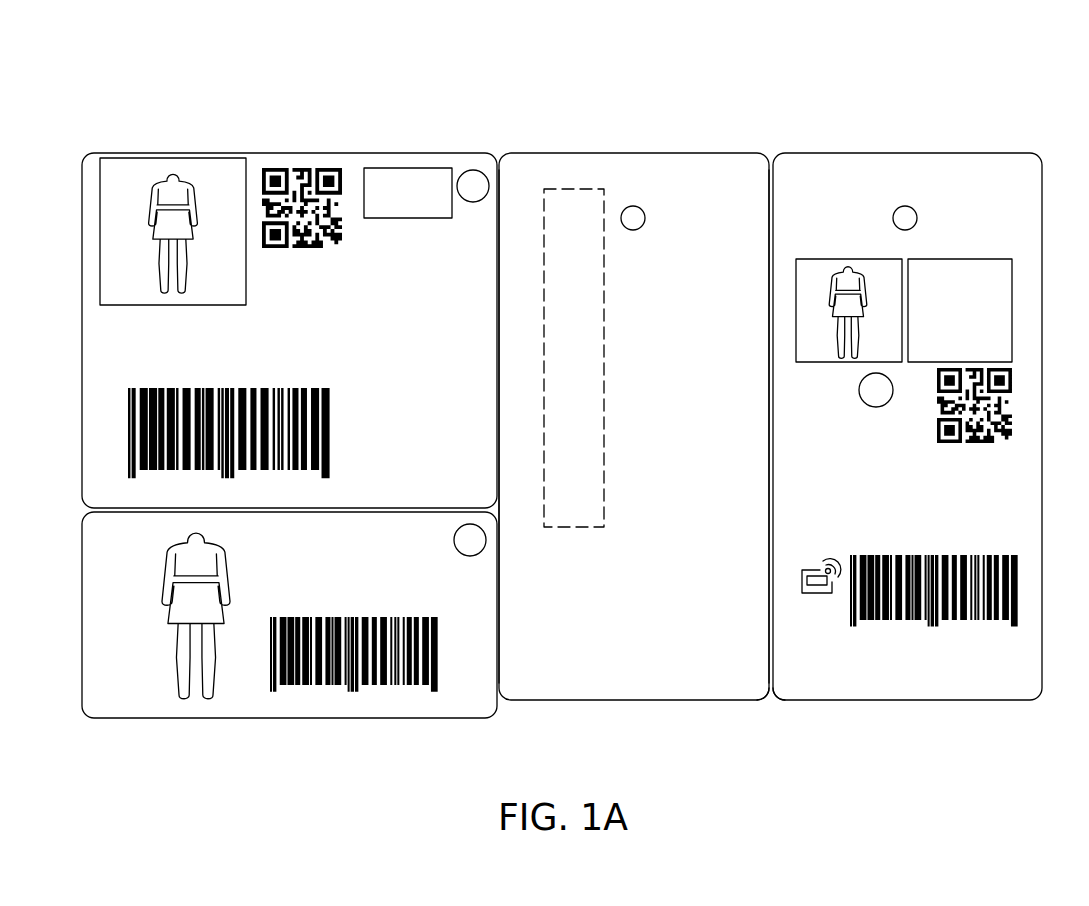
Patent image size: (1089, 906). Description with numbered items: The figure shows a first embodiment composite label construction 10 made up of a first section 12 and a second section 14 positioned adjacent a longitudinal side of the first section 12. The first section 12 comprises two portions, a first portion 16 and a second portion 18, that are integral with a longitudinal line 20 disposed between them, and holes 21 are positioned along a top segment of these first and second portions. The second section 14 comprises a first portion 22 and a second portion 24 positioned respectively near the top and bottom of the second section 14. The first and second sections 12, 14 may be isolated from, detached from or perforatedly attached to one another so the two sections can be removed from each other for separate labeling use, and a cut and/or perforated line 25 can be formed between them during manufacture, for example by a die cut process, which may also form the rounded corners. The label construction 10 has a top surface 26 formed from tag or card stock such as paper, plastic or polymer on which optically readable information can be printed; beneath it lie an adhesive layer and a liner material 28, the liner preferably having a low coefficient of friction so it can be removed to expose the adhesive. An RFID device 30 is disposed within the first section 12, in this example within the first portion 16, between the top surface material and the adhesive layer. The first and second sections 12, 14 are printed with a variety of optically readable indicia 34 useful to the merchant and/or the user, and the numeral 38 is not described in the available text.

The composite label construction 10 is at (562, 386).
The first section 12 is at (770, 414).
The second section 14 is at (543, 403).
The first portion of first section 16 is at (634, 450).
The second portion of first section 18 is at (907, 450).
The longitudinal line 20 is at (737, 426).
The holes 21 is at (799, 242).
The first portion of second section 22 is at (289, 310).
The second portion of second section 24 is at (289, 638).
The cut and/or perforated line 25 is at (528, 426).
The top surface 26 is at (761, 309).
The liner material 28 is at (771, 730).
The RFID device 30 is at (602, 358).
The optically readable indicia 34 is at (280, 406).
The size indicator 38 is at (645, 490).